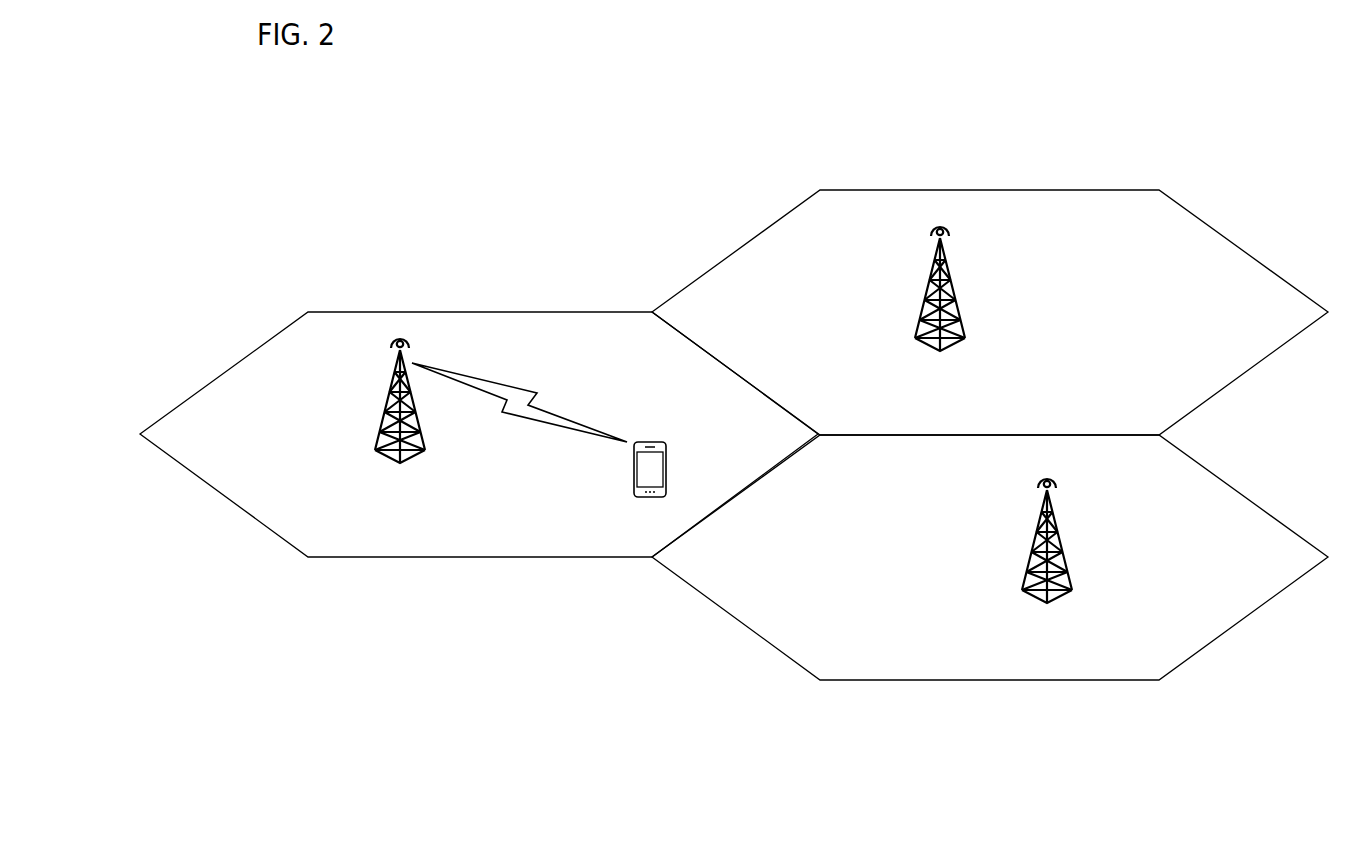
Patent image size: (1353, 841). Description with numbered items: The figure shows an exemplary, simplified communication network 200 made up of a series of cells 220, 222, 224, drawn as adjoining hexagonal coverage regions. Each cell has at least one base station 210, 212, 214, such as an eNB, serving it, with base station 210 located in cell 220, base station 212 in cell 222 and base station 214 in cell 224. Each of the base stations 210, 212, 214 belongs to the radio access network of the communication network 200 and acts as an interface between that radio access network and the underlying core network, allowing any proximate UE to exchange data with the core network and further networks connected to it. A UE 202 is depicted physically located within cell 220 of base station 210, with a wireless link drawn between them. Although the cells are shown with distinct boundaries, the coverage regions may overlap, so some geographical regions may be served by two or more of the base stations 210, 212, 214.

The communication network 200 is at (552, 119).
The UE 202 is at (650, 482).
The base station 210 is at (400, 418).
The base station 212 is at (940, 302).
The base station 214 is at (1047, 558).
The cell 220 is at (574, 312).
The cell 222 is at (1050, 190).
The cell 224 is at (1159, 682).